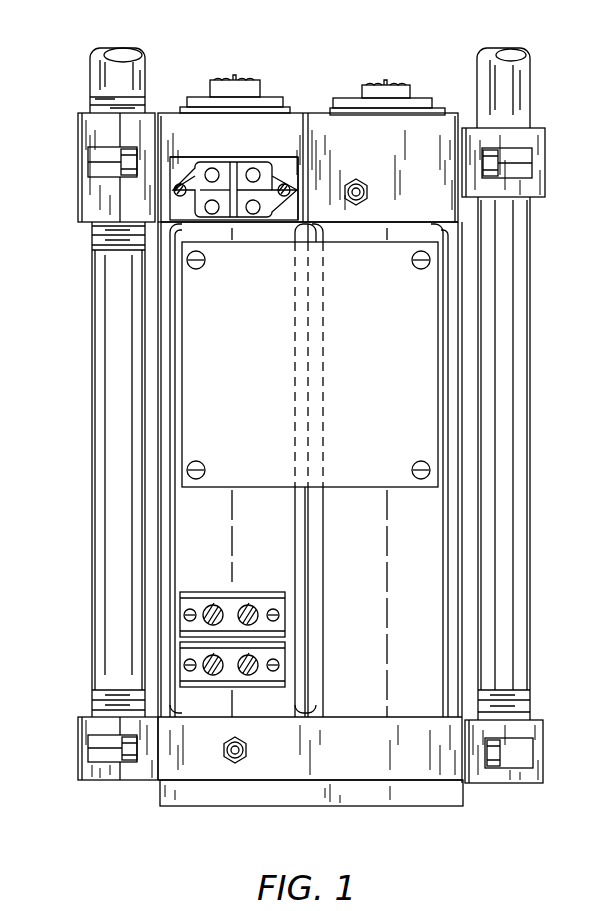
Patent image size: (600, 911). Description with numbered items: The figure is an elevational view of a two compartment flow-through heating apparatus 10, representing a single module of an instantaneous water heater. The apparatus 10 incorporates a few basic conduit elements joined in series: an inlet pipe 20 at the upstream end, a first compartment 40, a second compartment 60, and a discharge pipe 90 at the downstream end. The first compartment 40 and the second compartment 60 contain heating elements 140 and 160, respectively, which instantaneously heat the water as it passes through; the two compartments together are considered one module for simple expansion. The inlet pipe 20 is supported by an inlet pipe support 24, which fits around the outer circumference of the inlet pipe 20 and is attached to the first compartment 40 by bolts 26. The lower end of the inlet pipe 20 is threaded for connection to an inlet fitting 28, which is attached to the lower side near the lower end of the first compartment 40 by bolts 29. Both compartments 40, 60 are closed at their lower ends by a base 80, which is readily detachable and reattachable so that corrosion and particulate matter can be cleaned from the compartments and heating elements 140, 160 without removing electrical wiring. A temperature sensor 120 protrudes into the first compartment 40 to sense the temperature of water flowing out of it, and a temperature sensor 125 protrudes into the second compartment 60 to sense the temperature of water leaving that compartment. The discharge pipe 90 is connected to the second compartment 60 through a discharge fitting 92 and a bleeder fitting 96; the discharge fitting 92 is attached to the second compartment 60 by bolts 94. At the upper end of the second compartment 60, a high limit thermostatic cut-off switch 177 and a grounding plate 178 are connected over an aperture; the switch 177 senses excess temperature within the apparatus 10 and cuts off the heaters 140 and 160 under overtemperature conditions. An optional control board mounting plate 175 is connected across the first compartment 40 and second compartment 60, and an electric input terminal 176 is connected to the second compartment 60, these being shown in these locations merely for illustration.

The flow-through heating apparatus 10 is at (112, 28).
The inlet pipe 20 is at (515, 362).
The inlet pipe support 24 is at (535, 138).
The bolts 26 is at (500, 163).
The inlet fitting 28 is at (540, 733).
The bolts 29 is at (500, 757).
The first compartment 40 is at (414, 525).
The second compartment 60 is at (225, 540).
The base 80 is at (447, 810).
The discharge pipe 90 is at (105, 348).
The discharge fitting 92 is at (95, 723).
The bolts 94 is at (122, 160).
The bleeder fitting 96 is at (88, 203).
The temperature sensor 120 is at (372, 196).
The temperature sensor 125 is at (223, 760).
The heating element 140 is at (403, 87).
The heating element 160 is at (253, 88).
The control board mounting plate 175 is at (310, 364).
The electric input terminal 176 is at (192, 605).
The high limit thermostatic cut-off switch 177 is at (197, 173).
The grounding plate 178 is at (287, 158).